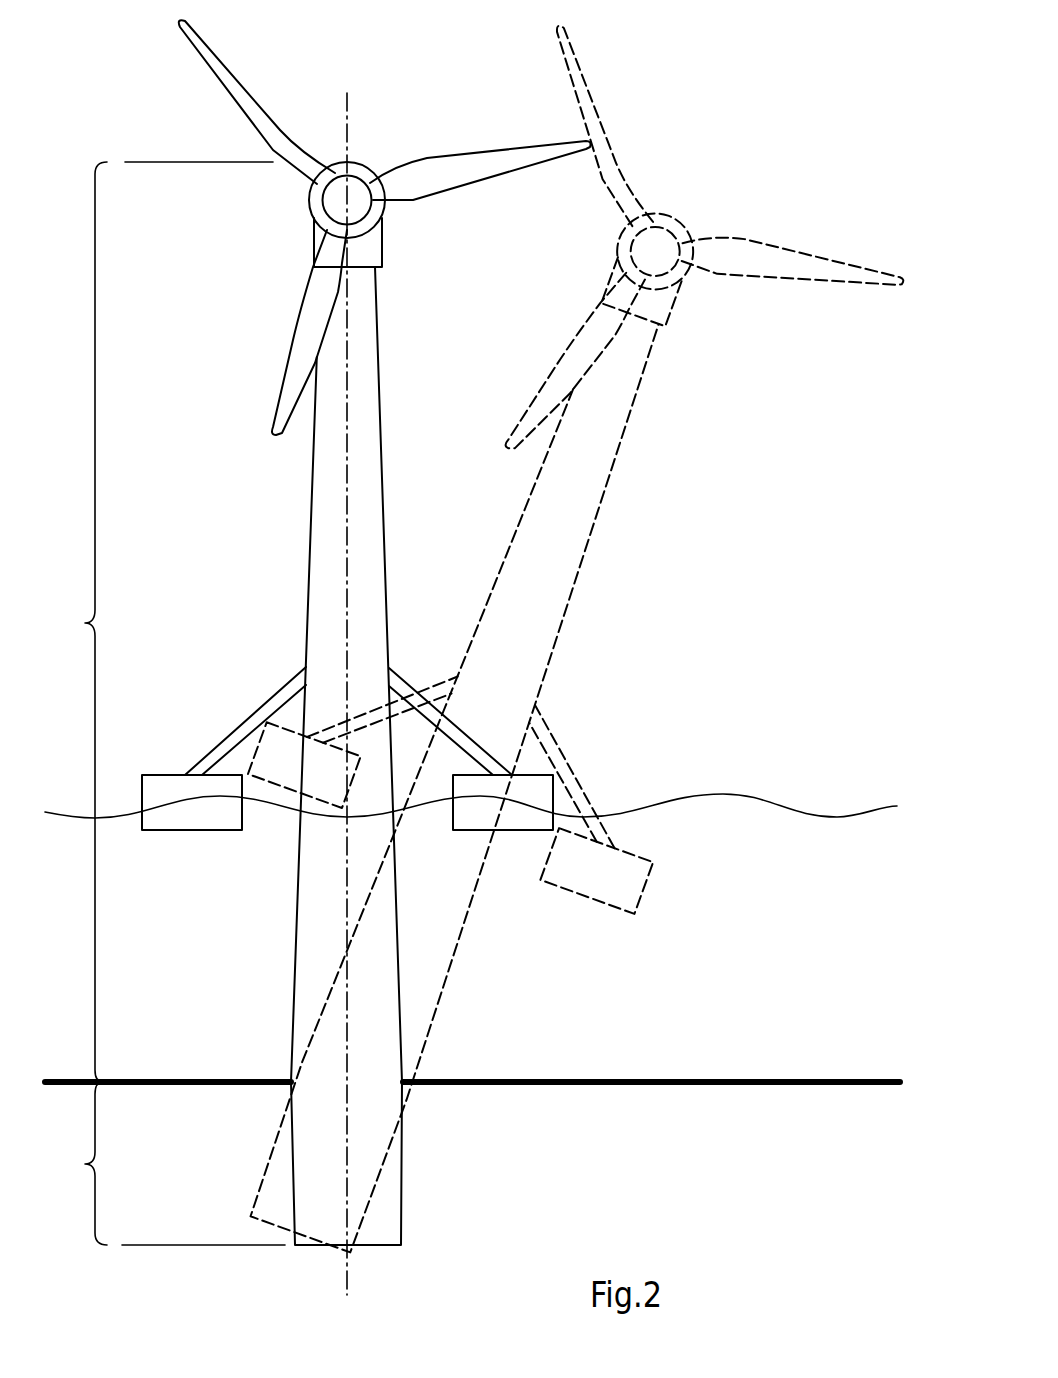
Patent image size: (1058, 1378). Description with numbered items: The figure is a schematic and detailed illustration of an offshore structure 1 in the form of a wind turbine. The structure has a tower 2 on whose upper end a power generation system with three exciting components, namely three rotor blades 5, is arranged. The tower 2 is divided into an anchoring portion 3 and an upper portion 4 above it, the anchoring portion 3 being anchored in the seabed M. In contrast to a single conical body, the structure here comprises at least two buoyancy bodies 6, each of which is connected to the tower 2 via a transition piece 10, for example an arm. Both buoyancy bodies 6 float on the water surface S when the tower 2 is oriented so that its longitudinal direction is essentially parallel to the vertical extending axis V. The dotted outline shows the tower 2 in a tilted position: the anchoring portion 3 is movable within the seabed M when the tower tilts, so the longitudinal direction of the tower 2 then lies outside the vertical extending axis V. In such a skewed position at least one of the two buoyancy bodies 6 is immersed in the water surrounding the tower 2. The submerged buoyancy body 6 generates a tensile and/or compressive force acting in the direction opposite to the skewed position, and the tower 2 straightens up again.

The offshore structure 1 is at (526, 659).
The tower 2 is at (370, 543).
The anchoring portion 3 is at (175, 1163).
The upper portion 4 is at (169, 622).
The rotor blades 5 is at (243, 90).
The buoyancy body 6 is at (160, 787).
The transition piece 10 is at (238, 727).
The water surface S is at (726, 793).
The seabed M is at (623, 1079).
The vertical extending axis V is at (348, 117).